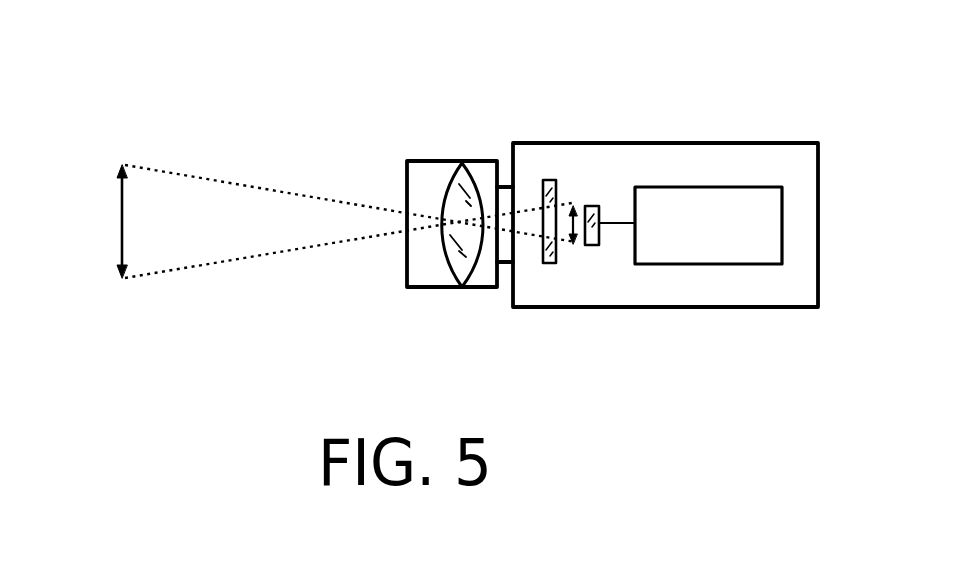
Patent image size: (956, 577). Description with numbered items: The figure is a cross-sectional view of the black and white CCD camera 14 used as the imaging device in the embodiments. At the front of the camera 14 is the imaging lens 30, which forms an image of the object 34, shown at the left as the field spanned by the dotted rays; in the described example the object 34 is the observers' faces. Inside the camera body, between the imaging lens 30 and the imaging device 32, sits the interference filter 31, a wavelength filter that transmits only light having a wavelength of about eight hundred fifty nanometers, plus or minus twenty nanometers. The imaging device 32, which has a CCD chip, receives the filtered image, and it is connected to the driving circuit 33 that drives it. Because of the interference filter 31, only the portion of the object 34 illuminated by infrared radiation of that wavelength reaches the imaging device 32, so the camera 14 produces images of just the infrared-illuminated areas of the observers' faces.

The black and white CCD camera 14 is at (662, 308).
The imaging lens 30 is at (447, 178).
The interference filter 31 is at (550, 180).
The imaging device 32 is at (588, 206).
The driving circuit 33 is at (713, 187).
The object 34 is at (122, 217).